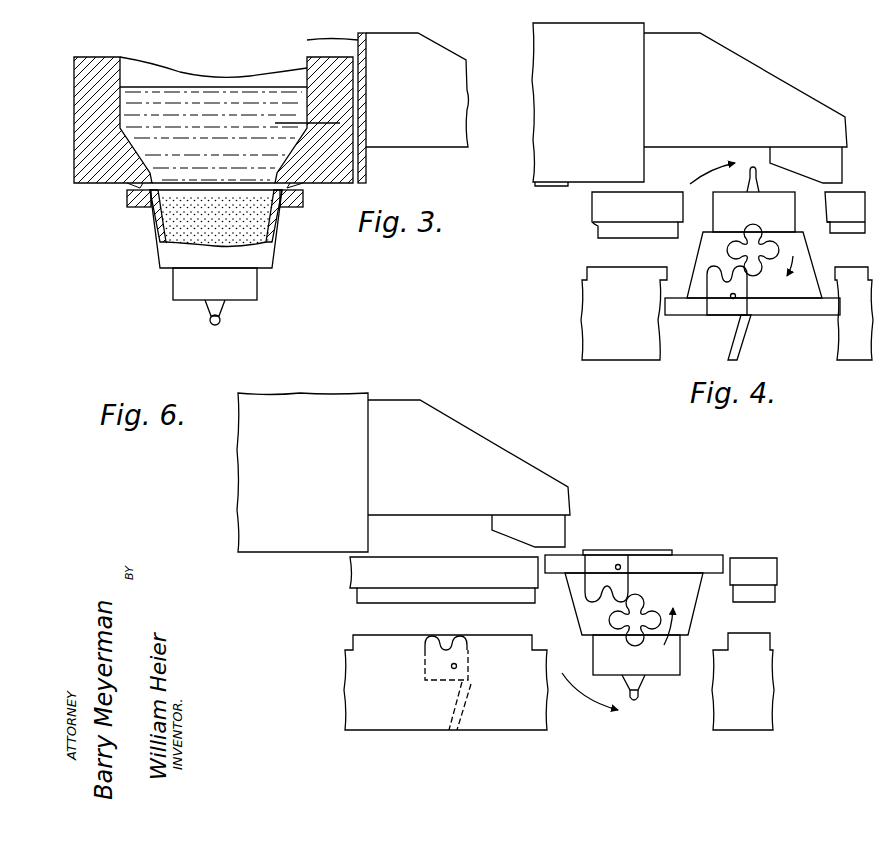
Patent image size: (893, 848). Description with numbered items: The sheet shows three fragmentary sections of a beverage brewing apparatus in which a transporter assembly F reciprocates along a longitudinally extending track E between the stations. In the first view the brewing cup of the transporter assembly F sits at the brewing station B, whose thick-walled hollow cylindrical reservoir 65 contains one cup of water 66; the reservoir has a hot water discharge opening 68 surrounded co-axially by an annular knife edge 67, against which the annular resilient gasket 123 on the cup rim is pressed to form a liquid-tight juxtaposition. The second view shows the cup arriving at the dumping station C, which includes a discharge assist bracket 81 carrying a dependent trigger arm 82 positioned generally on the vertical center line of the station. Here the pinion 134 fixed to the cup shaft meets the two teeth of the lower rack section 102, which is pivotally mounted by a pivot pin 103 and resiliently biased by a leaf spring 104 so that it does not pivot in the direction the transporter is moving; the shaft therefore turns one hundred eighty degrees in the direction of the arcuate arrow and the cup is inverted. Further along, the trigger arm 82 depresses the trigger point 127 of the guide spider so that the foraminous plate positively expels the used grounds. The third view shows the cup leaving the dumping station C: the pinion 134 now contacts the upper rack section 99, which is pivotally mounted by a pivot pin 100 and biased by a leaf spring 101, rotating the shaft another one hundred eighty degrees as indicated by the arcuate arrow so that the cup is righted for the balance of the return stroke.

In FIG. 3, the brewing station B is at (262, 78).
In FIG. 3, the thick-walled hollow cylindrical reservoir 65 is at (340, 90).
In FIG. 3, the water 66 is at (340, 123).
In FIG. 3, the annular knife edge 67 is at (140, 190).
In FIG. 3, the hot water discharge opening 68 is at (228, 182).
In FIG. 3, the annular resilient gasket 123 is at (293, 190).
In FIG. 3, the transporter assembly F is at (150, 256).
In FIG. 4, the transporter assembly F is at (768, 241).
In FIG. 6, the transporter assembly F is at (683, 619).
In FIG. 4, the dumping station C is at (745, 90).
In FIG. 6, the dumping station C is at (469, 457).
In FIG. 4, the discharge assist bracket 81 is at (797, 104).
In FIG. 6, the discharge assist bracket 81 is at (465, 437).
In FIG. 4, the trigger arm 82 is at (838, 172).
In FIG. 6, the trigger arm 82 is at (553, 547).
In FIG. 4, the pinion 134 is at (752, 230).
In FIG. 6, the pinion 134 is at (617, 619).
In FIG. 4, the lower rack section 102 is at (723, 292).
In FIG. 6, the lower rack section 102 is at (438, 660).
In FIG. 4, the pivot pin 103 is at (737, 296).
In FIG. 4, the leaf spring 104 is at (745, 340).
In FIG. 4, the track E is at (617, 211).
In FIG. 6, the track E is at (780, 706).
In FIG. 6, the upper rack section 99 is at (604, 566).
In FIG. 6, the pivot pin 100 is at (622, 569).
In FIG. 6, the leaf spring 101 is at (660, 554).
In FIG. 6, the trigger point 127 is at (641, 697).